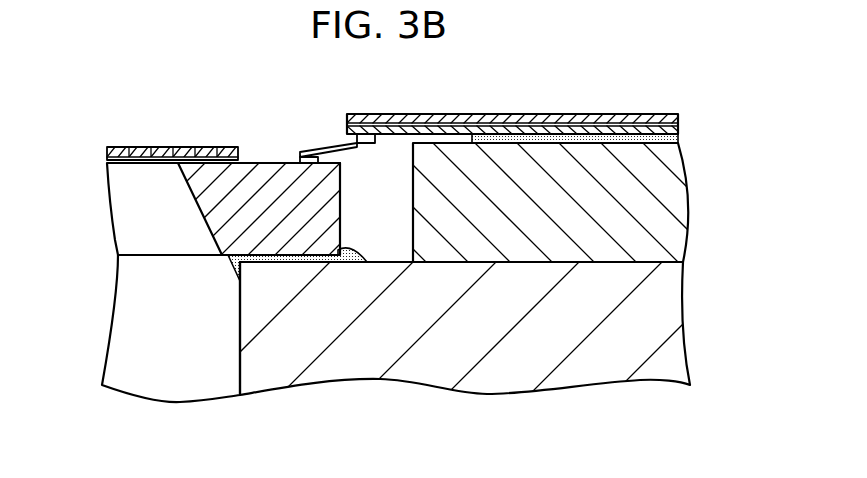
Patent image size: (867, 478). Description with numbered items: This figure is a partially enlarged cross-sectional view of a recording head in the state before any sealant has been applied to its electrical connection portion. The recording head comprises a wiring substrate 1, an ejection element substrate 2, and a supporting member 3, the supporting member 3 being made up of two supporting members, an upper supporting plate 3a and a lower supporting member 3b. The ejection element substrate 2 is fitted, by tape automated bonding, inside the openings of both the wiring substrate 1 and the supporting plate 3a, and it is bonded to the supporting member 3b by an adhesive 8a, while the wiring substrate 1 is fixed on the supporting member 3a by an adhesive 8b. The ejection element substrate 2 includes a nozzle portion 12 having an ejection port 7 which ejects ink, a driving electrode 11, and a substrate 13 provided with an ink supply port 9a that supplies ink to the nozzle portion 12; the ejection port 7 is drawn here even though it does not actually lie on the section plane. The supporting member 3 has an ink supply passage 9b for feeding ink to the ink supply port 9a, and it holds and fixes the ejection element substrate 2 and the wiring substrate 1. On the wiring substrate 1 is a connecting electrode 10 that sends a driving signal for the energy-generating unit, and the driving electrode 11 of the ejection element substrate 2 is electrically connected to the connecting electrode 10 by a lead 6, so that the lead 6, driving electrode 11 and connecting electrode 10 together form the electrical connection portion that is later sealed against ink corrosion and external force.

The wiring substrate 1 is at (688, 114).
The ejection element substrate 2 is at (100, 148).
The supporting member 3 is at (758, 182).
The supporting plate 3a is at (673, 202).
The supporting member 3b is at (670, 305).
The lead 6 is at (333, 150).
The ejection port 7 is at (158, 147).
The adhesive 8a is at (273, 262).
The adhesive 8b is at (555, 141).
The ink supply port 9a is at (152, 222).
The ink supply passage 9b is at (192, 343).
The connecting electrode 10 is at (367, 140).
The driving electrode 11 is at (303, 155).
The nozzle portion 12 is at (118, 147).
The substrate 13 is at (232, 180).